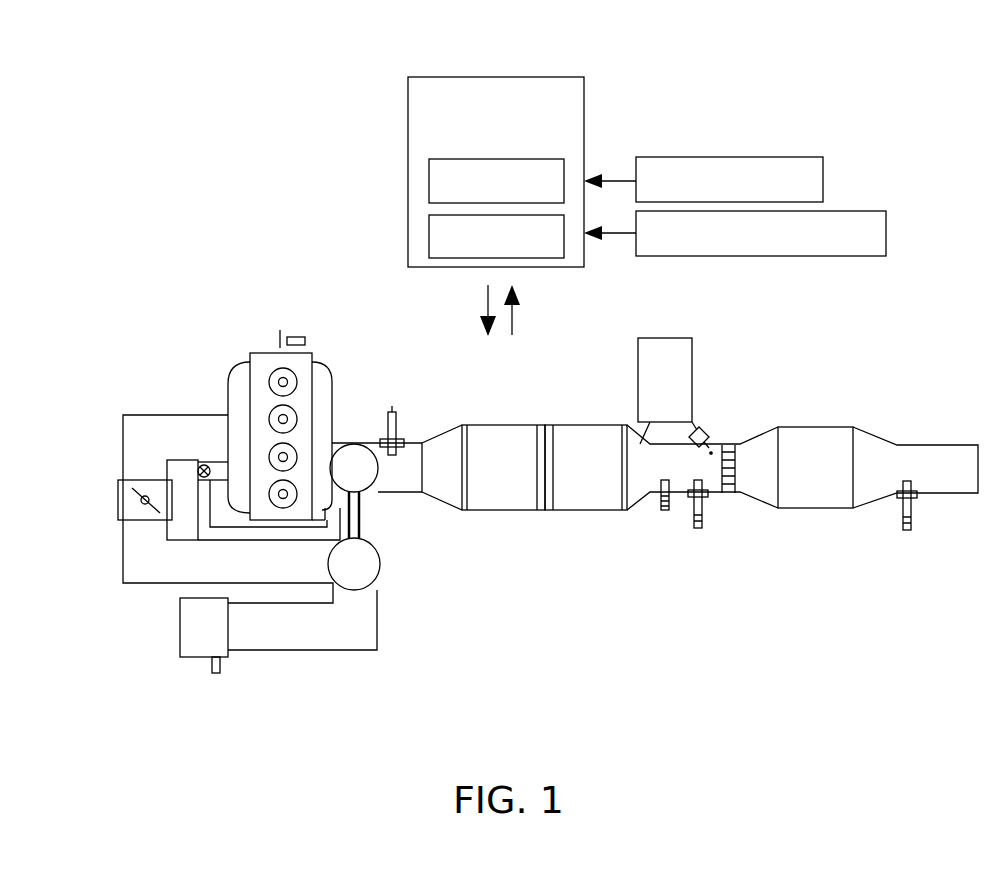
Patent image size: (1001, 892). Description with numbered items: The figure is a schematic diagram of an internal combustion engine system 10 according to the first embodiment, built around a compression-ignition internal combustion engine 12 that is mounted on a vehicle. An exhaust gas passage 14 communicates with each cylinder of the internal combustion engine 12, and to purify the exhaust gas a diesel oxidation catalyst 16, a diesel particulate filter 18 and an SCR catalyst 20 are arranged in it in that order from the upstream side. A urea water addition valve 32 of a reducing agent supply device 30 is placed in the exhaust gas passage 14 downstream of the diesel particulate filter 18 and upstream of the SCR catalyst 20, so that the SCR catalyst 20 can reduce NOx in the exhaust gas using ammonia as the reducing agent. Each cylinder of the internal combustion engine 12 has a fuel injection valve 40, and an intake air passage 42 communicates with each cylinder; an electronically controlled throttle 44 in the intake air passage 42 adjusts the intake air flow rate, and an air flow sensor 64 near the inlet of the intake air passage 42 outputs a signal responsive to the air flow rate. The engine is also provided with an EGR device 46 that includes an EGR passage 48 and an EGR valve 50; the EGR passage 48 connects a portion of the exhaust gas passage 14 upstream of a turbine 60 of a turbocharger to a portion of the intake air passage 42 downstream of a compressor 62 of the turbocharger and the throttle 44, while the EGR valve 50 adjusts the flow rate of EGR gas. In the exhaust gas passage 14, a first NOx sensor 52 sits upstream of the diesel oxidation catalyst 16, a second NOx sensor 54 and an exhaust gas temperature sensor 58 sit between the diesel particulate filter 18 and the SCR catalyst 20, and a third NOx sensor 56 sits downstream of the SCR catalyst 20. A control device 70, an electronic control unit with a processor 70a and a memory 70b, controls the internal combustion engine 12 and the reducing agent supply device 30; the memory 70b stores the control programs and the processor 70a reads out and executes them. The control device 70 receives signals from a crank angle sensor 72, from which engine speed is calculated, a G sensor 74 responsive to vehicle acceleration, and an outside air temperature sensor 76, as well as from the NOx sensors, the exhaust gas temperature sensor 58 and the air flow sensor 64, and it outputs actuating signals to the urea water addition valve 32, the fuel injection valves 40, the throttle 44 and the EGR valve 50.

The internal combustion engine system 10 is at (874, 79).
The internal combustion engine 12 is at (177, 385).
The exhaust gas passage 14 is at (410, 494).
The diesel oxidation catalyst 16 is at (503, 440).
The diesel particulate filter 18 is at (593, 440).
The SCR catalyst 20 is at (800, 437).
The reducing agent supply device 30 is at (623, 341).
The urea water addition valve 32 is at (709, 431).
The fuel injection valve 40 is at (278, 378).
The intake air passage 42 is at (285, 651).
The throttle 44 is at (118, 499).
The EGR device 46 is at (183, 525).
The EGR passage 48 is at (213, 532).
The EGR valve 50 is at (198, 470).
The first NOx sensor 52 is at (395, 410).
The second NOx sensor 54 is at (705, 510).
The third NOx sensor 56 is at (912, 512).
The exhaust gas temperature sensor 58 is at (657, 503).
The turbine 60 is at (353, 444).
The compressor 62 is at (380, 572).
The air flow sensor 64 is at (215, 674).
The control device 70 is at (526, 74).
The processor 70a is at (429, 178).
The memory 70b is at (429, 232).
The crank angle sensor 72 is at (305, 341).
The G sensor 74 is at (823, 183).
The outside air temperature sensor 76 is at (886, 233).